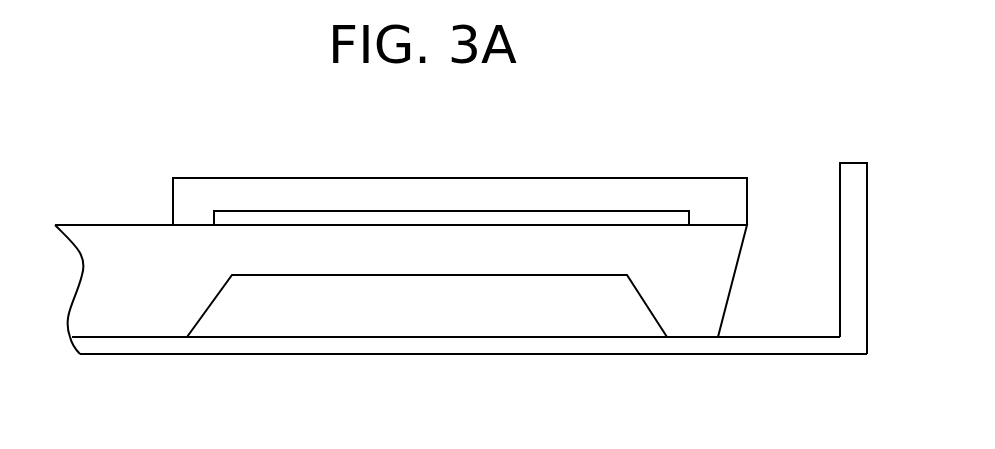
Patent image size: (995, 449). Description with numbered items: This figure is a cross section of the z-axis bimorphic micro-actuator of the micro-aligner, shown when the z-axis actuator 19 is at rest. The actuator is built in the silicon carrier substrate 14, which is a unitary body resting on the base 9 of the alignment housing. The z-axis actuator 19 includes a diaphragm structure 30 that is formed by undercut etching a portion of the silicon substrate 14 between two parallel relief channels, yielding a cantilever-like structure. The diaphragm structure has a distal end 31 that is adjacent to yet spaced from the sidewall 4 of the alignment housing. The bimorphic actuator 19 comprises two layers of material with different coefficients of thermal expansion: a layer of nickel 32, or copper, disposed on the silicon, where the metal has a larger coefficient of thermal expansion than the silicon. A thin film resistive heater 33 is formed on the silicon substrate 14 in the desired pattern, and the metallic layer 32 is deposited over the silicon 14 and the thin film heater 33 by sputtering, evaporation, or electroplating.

The sidewall 4 is at (853, 232).
The base 9 is at (421, 343).
The carrier substrate 14 is at (122, 318).
The z-axis actuator 19 is at (737, 163).
The diaphragm structure 30 is at (455, 268).
The distal end 31 is at (710, 307).
The layer of nickel 32 is at (397, 208).
The thin film resistive heater 33 is at (482, 218).